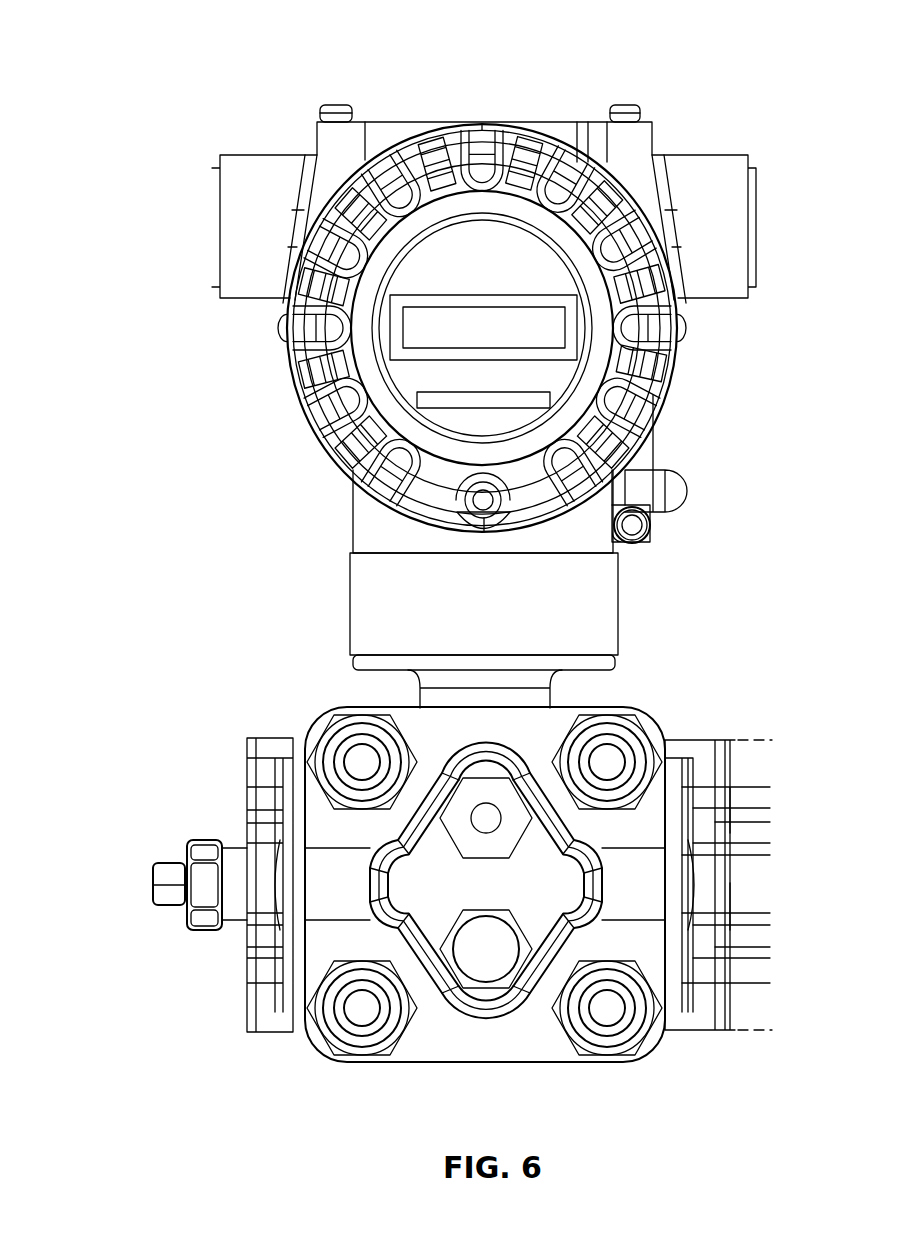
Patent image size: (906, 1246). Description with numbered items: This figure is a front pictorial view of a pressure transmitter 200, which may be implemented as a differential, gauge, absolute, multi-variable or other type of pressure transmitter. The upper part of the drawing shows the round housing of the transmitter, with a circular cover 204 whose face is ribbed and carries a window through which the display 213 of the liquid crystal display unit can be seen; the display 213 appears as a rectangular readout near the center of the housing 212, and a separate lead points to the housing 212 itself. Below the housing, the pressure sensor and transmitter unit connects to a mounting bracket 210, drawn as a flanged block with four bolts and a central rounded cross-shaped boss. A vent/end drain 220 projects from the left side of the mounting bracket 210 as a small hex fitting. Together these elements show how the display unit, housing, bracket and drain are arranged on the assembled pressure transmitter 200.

The pressure transmitter 200 is at (236, 38).
The cover with display window 204 is at (500, 205).
The electronics housing 212 is at (685, 105).
The display 213 is at (386, 334).
The mounting bracket 210 is at (684, 703).
The vent/end drain 220 is at (141, 883).